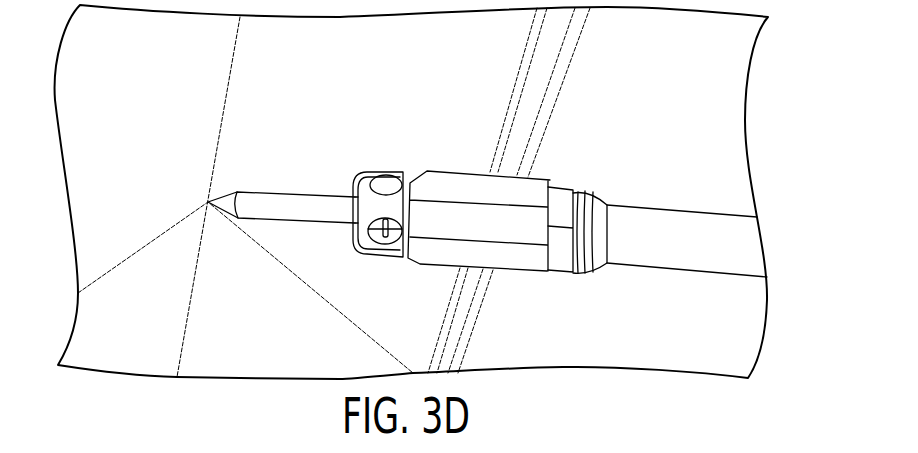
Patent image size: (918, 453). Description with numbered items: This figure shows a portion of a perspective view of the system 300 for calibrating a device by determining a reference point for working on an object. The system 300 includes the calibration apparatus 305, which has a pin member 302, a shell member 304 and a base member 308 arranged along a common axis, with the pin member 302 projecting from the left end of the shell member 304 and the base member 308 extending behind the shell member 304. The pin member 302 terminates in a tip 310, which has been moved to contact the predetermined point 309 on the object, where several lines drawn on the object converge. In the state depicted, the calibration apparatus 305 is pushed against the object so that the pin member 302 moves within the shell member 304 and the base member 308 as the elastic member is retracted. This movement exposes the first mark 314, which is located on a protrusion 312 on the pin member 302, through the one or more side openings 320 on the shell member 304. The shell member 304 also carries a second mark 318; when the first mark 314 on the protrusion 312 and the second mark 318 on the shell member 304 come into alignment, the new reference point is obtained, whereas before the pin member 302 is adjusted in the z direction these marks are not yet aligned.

The system 300 is at (832, 0).
The pin member 302 is at (267, 198).
The shell member 304 is at (393, 172).
The calibration apparatus 305 is at (604, 148).
The base member 308 is at (470, 175).
The predetermined point 309 is at (188, 230).
The tip 310 is at (207, 200).
The protrusion 312 is at (372, 249).
The first mark 314 is at (387, 240).
The second mark 318 is at (386, 200).
The side openings 320 is at (348, 238).